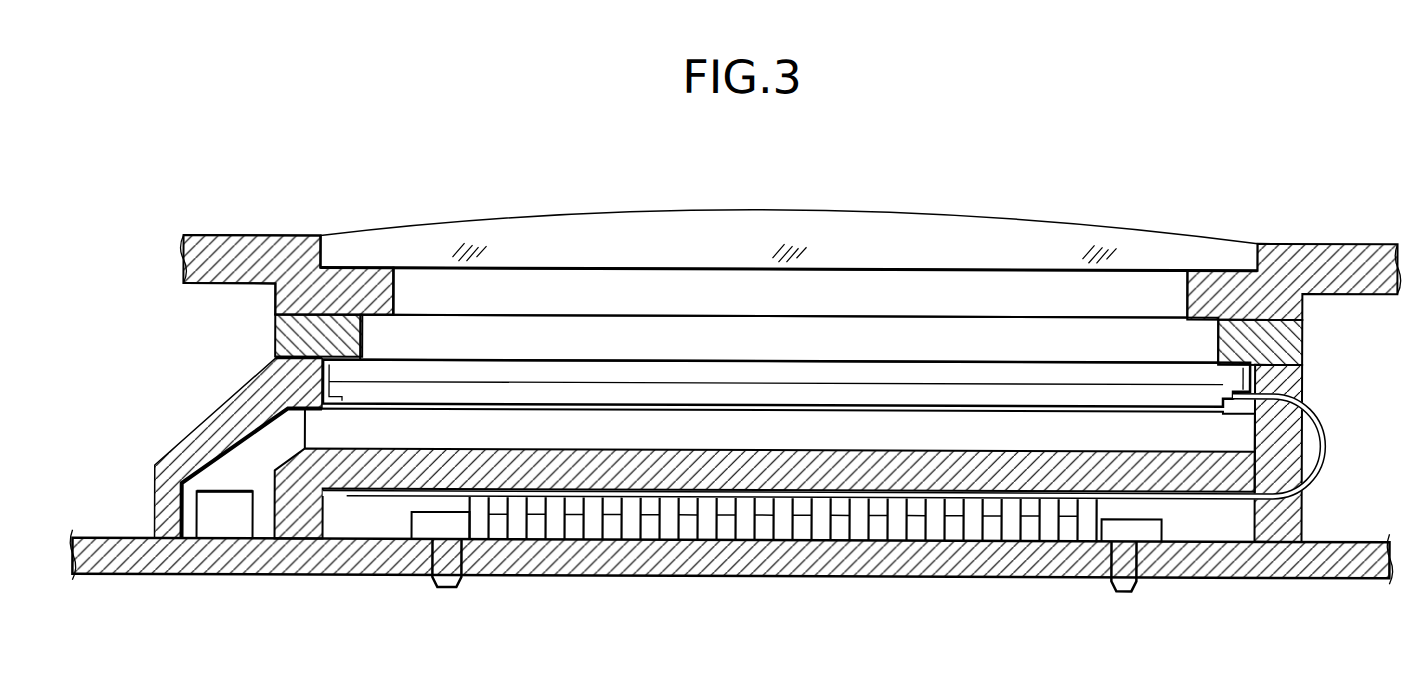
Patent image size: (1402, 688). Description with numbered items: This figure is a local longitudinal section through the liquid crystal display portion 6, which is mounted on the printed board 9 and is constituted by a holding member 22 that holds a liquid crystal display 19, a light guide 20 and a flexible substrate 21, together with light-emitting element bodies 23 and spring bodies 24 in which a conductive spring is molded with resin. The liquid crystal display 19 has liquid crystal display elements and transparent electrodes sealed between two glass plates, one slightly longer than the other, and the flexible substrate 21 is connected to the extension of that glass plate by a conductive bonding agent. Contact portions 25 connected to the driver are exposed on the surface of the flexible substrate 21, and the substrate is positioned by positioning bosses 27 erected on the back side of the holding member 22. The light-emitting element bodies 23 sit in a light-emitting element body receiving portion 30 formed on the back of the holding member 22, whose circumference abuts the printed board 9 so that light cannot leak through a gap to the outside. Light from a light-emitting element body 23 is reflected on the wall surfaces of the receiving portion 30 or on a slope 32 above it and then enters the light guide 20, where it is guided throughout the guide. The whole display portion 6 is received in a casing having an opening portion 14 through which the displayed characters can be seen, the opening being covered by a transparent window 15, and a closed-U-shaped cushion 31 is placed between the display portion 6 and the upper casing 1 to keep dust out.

The upper casing 1 is at (1336, 252).
The liquid crystal display portion 6 is at (885, 372).
The printed board 9 is at (1213, 558).
The opening portion 14 is at (1137, 292).
The transparent window 15 is at (347, 246).
The liquid crystal display 19 is at (293, 368).
The light guide 20 is at (1230, 432).
The flexible substrate 21 is at (1327, 456).
The holding member 22 is at (250, 412).
The light-emitting element body 23 is at (237, 502).
The spring body 24 is at (420, 528).
The contact portion 25 is at (627, 500).
The positioning boss 27 is at (1122, 572).
The light-emitting element body receiving portion 30 is at (188, 527).
The closed-U-shaped cushion 31 is at (1280, 344).
The slope 32 is at (190, 478).